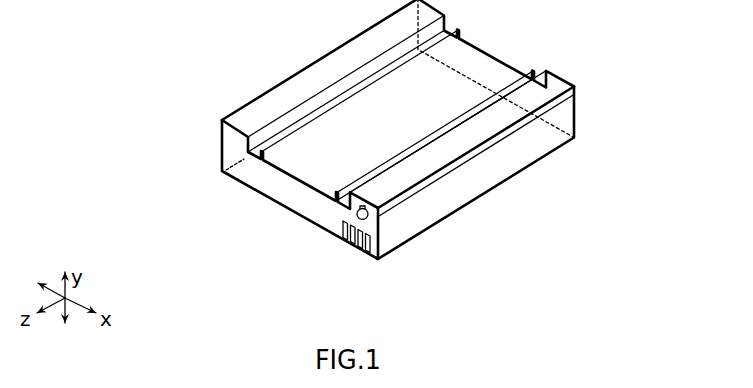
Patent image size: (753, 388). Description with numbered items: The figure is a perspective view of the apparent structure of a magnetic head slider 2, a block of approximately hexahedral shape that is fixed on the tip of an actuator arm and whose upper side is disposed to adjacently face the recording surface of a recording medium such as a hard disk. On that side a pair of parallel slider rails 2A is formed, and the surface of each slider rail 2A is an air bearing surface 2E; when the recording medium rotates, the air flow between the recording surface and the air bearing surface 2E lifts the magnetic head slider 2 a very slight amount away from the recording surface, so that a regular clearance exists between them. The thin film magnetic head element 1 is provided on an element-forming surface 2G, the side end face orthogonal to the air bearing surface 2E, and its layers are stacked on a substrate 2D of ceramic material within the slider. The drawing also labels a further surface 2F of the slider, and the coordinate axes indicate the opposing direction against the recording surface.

The thin film magnetic head element 1 is at (340, 234).
The magnetic head slider 2 is at (423, 131).
The slider rail 2A is at (261, 91).
The substrate 2D is at (550, 130).
The air bearing surface 2E is at (317, 72).
The back face 2F is at (489, 58).
The element-forming surface 2G is at (237, 165).